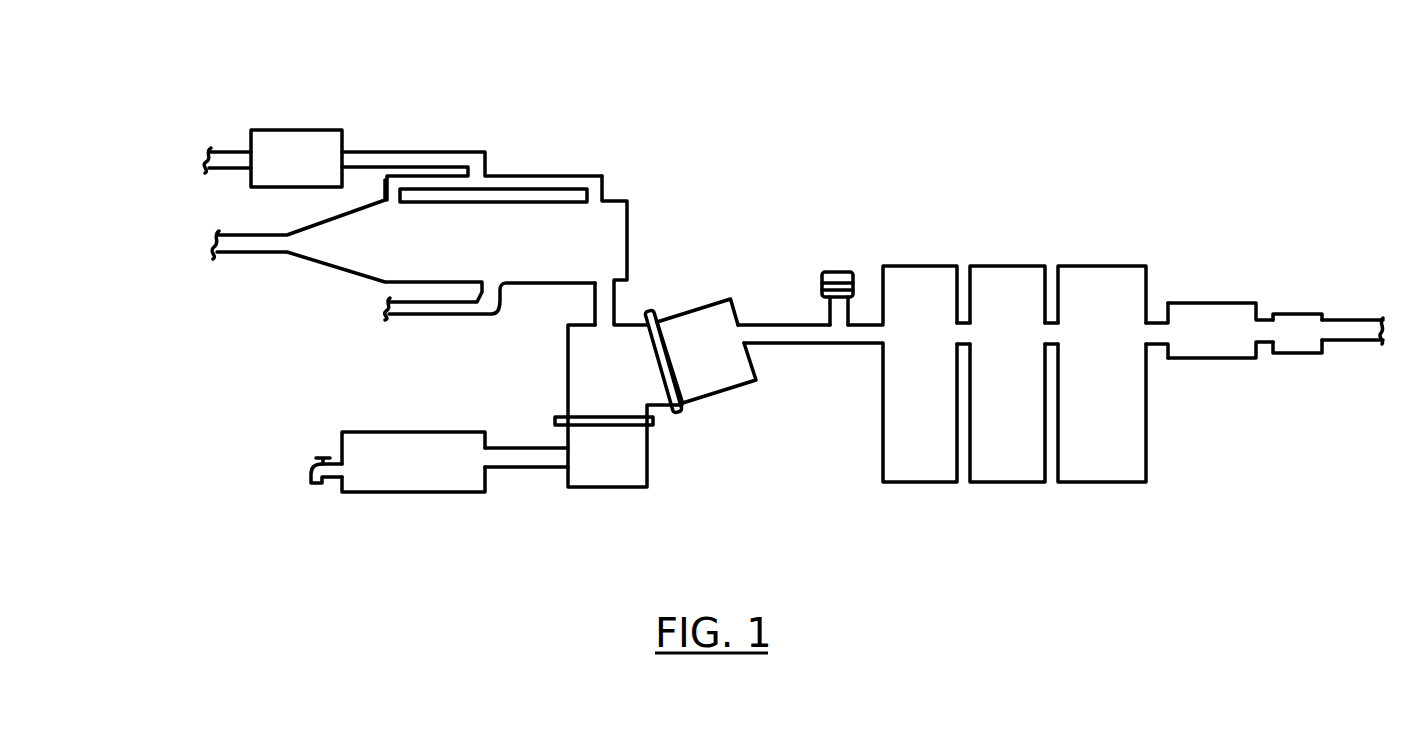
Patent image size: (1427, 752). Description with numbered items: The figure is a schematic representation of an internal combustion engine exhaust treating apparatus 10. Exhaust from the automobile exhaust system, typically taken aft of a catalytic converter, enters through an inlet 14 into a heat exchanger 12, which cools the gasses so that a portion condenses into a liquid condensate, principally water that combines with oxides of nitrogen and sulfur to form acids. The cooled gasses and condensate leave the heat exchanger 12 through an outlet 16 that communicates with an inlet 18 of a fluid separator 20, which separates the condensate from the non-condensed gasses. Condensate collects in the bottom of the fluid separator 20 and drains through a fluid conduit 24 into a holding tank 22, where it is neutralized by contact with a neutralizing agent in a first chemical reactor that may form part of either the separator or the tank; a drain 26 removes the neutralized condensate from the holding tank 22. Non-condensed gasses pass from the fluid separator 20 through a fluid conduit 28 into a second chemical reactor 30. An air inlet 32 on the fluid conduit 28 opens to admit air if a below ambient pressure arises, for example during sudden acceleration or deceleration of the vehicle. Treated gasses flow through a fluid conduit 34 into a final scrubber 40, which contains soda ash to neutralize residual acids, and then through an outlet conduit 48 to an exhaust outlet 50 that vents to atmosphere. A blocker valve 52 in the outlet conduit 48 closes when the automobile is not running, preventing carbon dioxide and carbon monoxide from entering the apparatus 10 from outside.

The apparatus 10 is at (882, 98).
The heat exchanger 12 is at (353, 275).
The inlet 14 is at (246, 254).
The outlet 16 is at (603, 280).
The inlet 18 is at (606, 323).
The fluid separator 20 is at (638, 395).
The holding tank 22 is at (411, 494).
The fluid conduit 24 is at (526, 447).
The drain 26 is at (314, 464).
The fluid conduit 28 is at (846, 345).
The second chemical reactor 30 is at (1010, 508).
The air inlet 32 is at (846, 270).
The fluid conduit 34 is at (1156, 345).
The final scrubber 40 is at (1200, 303).
The outlet conduit 48 is at (1340, 342).
The exhaust outlet 50 is at (1381, 342).
The blocker valve 52 is at (1297, 314).